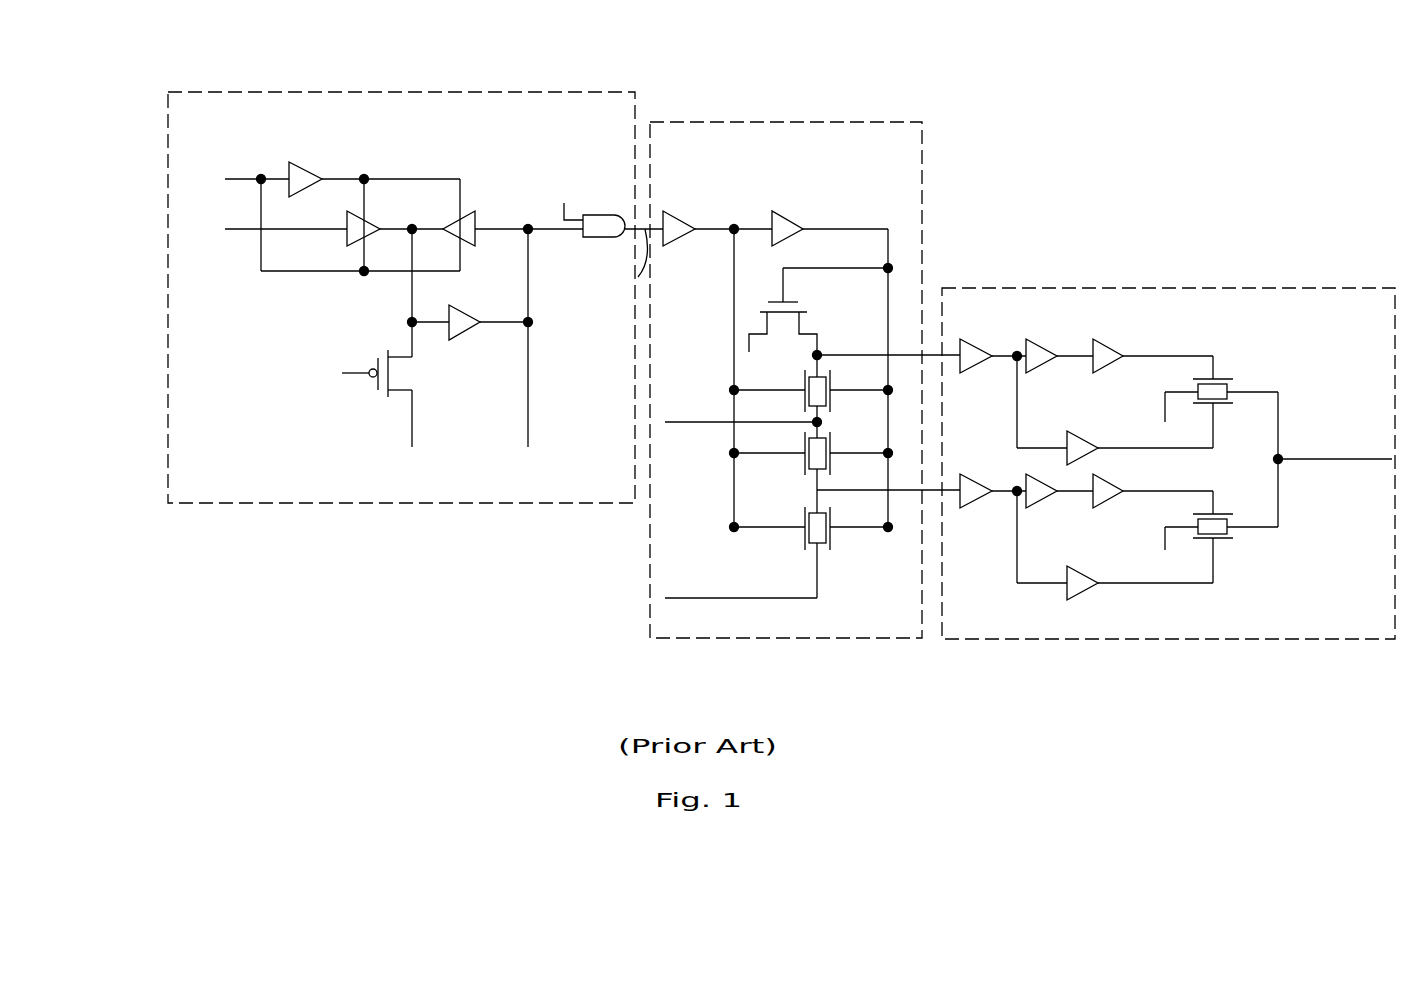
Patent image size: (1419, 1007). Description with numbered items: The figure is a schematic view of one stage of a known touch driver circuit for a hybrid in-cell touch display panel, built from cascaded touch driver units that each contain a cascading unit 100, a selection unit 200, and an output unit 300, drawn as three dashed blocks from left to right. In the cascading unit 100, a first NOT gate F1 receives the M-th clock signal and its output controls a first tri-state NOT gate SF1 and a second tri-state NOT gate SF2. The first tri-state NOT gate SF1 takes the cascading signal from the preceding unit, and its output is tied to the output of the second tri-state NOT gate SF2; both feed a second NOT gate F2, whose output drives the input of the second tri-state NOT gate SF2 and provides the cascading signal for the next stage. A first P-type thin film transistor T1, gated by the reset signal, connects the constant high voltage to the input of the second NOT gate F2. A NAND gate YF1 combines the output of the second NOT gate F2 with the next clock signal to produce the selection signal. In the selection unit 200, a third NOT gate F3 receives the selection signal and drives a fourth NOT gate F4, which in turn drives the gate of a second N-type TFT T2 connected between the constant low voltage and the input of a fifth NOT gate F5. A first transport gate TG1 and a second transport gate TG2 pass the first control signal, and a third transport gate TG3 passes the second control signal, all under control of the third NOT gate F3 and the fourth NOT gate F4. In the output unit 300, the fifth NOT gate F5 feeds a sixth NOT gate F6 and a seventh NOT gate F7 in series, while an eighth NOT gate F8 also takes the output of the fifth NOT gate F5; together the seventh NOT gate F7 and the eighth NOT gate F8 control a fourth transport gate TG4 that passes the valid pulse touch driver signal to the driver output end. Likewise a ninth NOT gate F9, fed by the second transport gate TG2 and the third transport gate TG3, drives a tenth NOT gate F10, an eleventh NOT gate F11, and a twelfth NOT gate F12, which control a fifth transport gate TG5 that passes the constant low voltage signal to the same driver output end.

The cascading unit 100 is at (418, 505).
The selection unit 200 is at (803, 122).
The output unit 300 is at (1168, 288).
The first NOT gate F1 is at (302, 164).
The second NOT gate F2 is at (472, 332).
The third NOT gate F3 is at (684, 213).
The fourth NOT gate F4 is at (782, 211).
The fifth NOT gate F5 is at (976, 339).
The sixth NOT gate F6 is at (1040, 339).
The seventh NOT gate F7 is at (1105, 339).
The eighth NOT gate F8 is at (1080, 432).
The ninth NOT gate F9 is at (976, 502).
The tenth NOT gate F10 is at (1049, 502).
The eleventh NOT gate F11 is at (1116, 502).
The twelfth NOT gate F12 is at (1088, 595).
The first tri-state NOT gate SF1 is at (341, 236).
The second tri-state NOT gate SF2 is at (471, 241).
The NAND gate YF1 is at (597, 237).
The first P-type thin film transistor T1 is at (403, 373).
The second N-type TFT T2 is at (783, 311).
The first transport gate TG1 is at (840, 396).
The second transport gate TG2 is at (840, 472).
The third transport gate TG3 is at (840, 550).
The fourth transport gate TG4 is at (1222, 413).
The fifth transport gate TG5 is at (1232, 548).